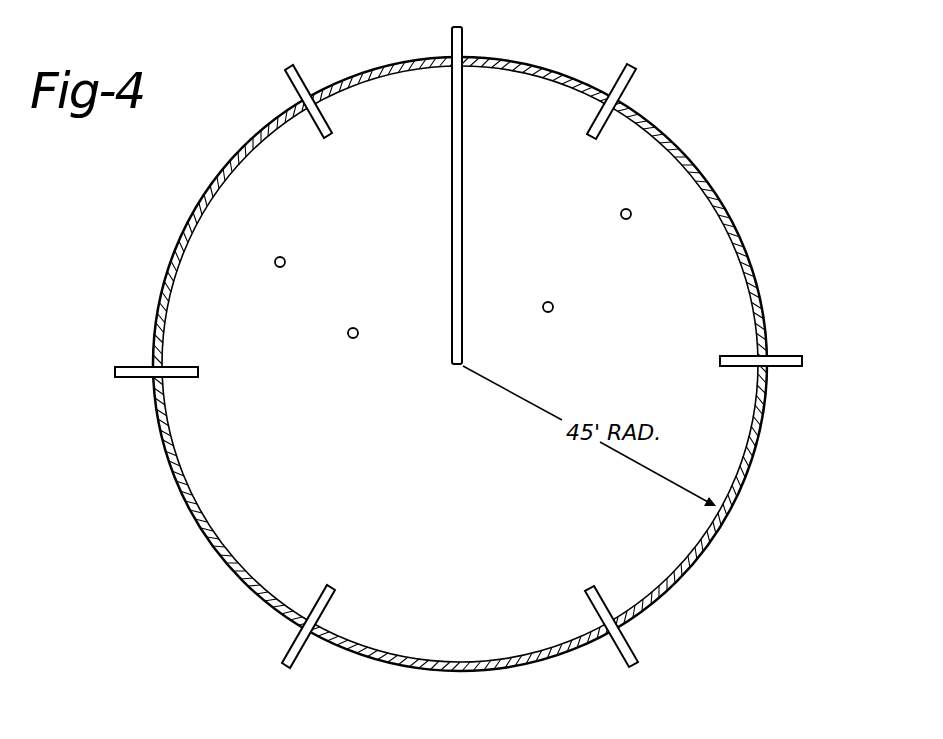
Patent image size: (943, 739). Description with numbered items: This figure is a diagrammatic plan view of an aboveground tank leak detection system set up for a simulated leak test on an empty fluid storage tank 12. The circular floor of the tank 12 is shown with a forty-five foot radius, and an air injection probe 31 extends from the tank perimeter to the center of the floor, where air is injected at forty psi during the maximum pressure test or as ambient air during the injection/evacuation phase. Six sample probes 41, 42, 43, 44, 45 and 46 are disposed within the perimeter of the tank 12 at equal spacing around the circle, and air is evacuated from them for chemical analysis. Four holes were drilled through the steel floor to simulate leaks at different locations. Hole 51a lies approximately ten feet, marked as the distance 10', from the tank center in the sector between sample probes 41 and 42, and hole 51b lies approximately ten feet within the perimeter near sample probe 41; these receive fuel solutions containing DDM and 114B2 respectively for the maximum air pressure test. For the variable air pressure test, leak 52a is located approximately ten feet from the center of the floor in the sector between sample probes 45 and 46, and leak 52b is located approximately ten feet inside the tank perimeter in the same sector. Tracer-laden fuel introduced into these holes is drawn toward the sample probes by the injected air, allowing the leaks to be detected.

The tank 12 is at (680, 150).
The air injection probe 31 is at (462, 44).
The sample probe 41 is at (625, 86).
The sample probe 42 is at (783, 355).
The sample probe 43 is at (640, 654).
The sample probe 44 is at (288, 658).
The sample probe 45 is at (120, 366).
The sample probe 46 is at (302, 80).
The hole 51a is at (553, 306).
The hole 51b is at (621, 213).
The leak 52a is at (351, 338).
The leak 52b is at (285, 258).
The ten foot distance 10' is at (444, 267).